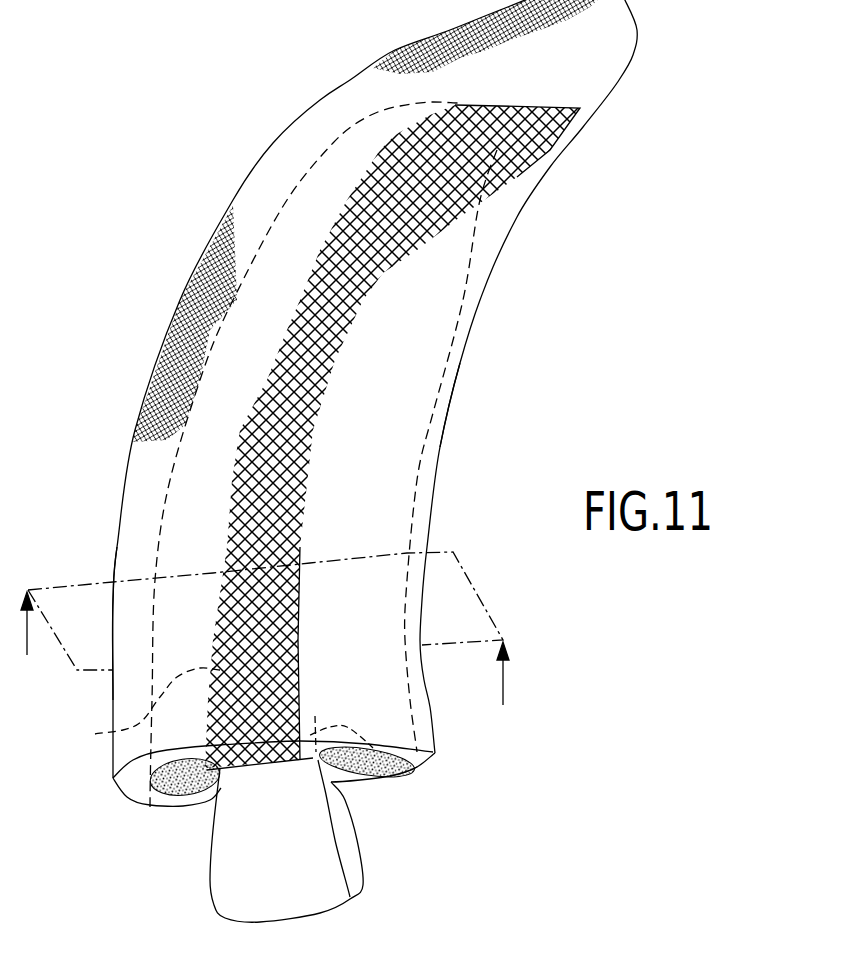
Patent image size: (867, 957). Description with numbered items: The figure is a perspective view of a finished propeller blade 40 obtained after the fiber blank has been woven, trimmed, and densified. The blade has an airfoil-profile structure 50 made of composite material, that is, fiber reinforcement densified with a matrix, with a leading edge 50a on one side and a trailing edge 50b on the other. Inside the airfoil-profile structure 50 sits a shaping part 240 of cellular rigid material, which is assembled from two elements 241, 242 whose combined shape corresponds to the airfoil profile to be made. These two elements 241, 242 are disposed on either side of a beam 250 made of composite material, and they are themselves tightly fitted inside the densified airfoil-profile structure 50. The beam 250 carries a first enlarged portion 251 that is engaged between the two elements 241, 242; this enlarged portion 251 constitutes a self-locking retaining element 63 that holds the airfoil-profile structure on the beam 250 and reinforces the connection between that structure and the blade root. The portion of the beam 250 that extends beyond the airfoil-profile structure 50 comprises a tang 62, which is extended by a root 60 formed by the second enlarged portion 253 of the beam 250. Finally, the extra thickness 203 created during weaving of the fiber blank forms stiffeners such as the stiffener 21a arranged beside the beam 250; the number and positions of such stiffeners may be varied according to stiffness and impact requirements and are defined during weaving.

The propeller blade 40 is at (222, 127).
The airfoil-profile structure 50 is at (327, 118).
The leading edge 50a is at (125, 480).
The trailing edge 50b is at (453, 393).
The stiffener 21a is at (135, 711).
The extra thickness 203 is at (562, 135).
The shaping part 240 is at (578, 263).
The element of cellular rigid material 241 is at (280, 257).
The element of cellular rigid material 242 is at (408, 340).
The beam 250 is at (310, 462).
The first enlarged portion 251 is at (397, 773).
The root 60 is at (228, 872).
The tang 62 is at (373, 773).
The retaining element 63 is at (315, 710).
The second enlarged portion 253 is at (353, 860).